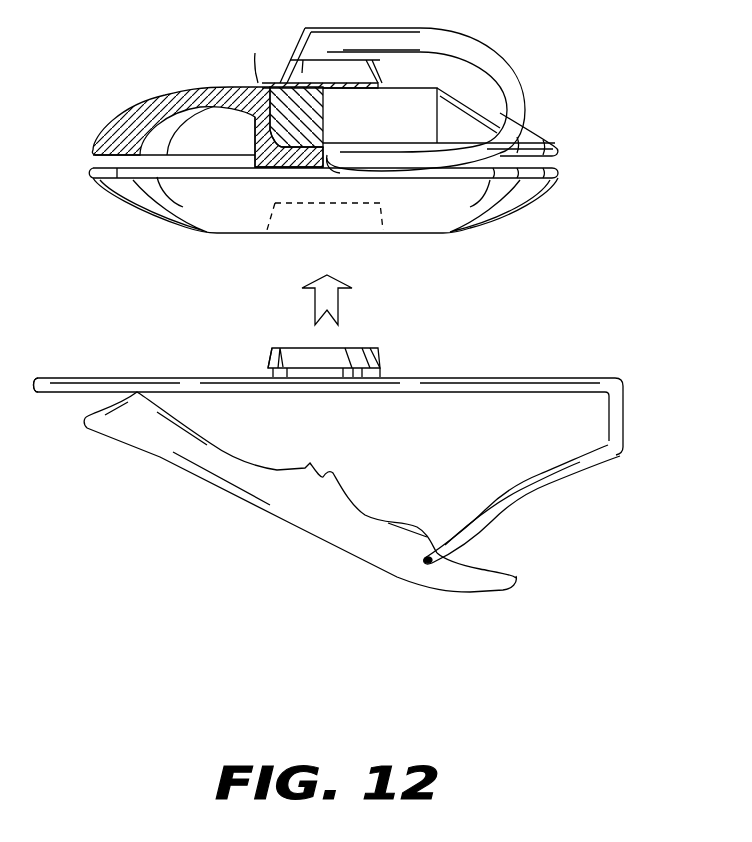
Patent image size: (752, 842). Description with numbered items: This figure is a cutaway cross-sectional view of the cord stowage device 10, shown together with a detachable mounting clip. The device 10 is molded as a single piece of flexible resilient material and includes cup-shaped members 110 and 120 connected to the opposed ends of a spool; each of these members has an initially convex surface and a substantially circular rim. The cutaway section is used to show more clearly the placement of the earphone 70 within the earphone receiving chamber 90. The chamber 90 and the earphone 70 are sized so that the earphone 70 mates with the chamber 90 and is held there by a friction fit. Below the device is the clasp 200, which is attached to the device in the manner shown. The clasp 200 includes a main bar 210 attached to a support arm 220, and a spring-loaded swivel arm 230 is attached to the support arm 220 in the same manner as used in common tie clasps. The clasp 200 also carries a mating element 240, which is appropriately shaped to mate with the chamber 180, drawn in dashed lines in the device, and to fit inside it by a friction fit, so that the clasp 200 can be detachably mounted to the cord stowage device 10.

The cord stowage device 10 is at (340, 745).
The earphone 70 is at (270, 85).
The earphone receiving chamber 90 is at (233, 107).
The cup-shaped member 110 is at (164, 94).
The cup-shaped member 120 is at (140, 210).
The chamber 180 is at (267, 220).
The clasp 200 is at (616, 420).
The main bar 210 is at (55, 385).
The support arm 220 is at (533, 482).
The spring-loaded swivel arm 230 is at (332, 537).
The mating element 240 is at (375, 367).